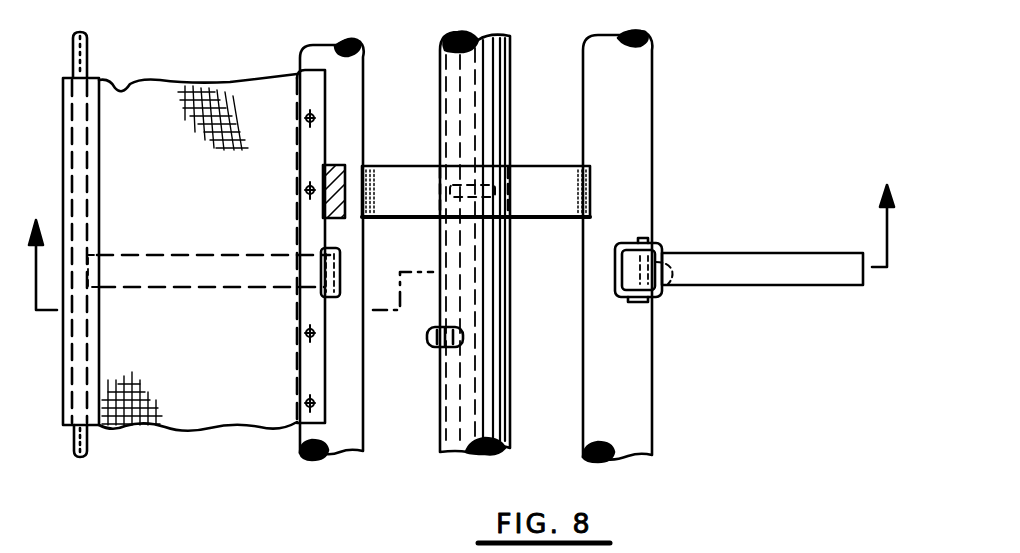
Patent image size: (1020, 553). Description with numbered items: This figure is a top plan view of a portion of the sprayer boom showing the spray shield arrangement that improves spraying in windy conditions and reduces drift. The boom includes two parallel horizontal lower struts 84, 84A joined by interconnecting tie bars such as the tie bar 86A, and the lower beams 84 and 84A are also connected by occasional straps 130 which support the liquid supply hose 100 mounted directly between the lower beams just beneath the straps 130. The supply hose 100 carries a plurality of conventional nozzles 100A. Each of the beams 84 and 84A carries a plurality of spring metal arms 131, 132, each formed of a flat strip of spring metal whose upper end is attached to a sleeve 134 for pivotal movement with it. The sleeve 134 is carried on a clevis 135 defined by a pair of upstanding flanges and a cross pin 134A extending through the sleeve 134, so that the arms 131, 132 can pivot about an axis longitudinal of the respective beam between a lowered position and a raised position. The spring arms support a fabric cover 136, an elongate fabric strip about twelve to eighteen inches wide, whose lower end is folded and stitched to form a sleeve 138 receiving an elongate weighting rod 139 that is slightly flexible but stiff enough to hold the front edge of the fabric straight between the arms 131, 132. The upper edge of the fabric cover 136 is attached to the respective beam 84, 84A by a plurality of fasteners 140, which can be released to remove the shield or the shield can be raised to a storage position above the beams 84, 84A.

The lower strut 84 is at (348, 100).
The lower strut 84A is at (630, 114).
The tie bar 86A is at (348, 162).
The supply hose 100 is at (484, 86).
The nozzle 100A is at (432, 338).
The strap 130 is at (529, 178).
The spring metal arm 131 is at (200, 267).
The spring metal arm 132 is at (804, 270).
The sleeve 134 is at (662, 265).
The cross pin 134A is at (683, 302).
The clevis 135 is at (632, 302).
The fabric cover 136 is at (180, 117).
The sleeve 138 is at (88, 118).
The weighting rod 139 is at (88, 440).
The fastener 140 is at (306, 402).